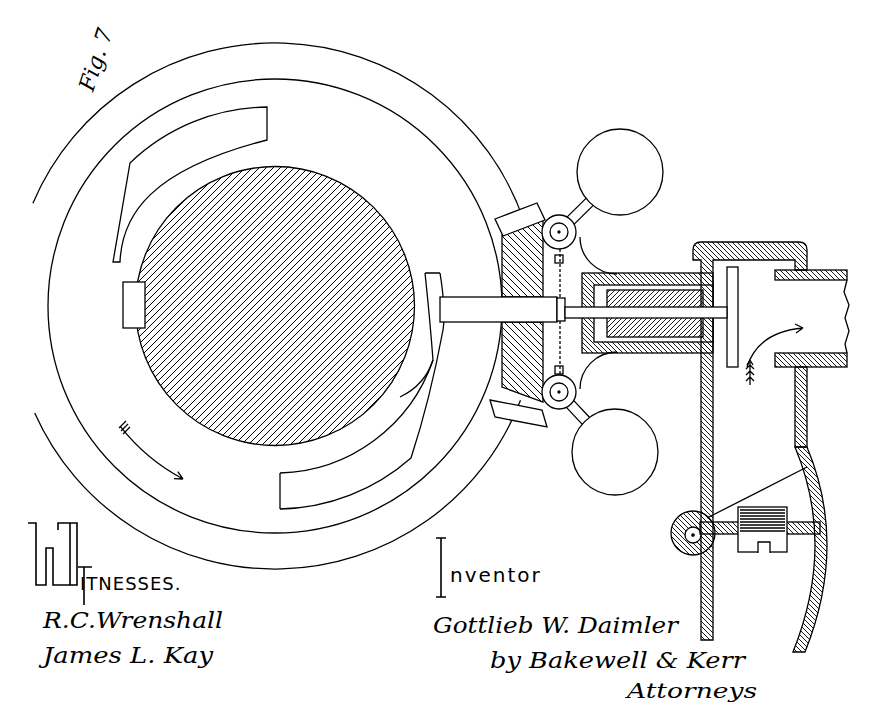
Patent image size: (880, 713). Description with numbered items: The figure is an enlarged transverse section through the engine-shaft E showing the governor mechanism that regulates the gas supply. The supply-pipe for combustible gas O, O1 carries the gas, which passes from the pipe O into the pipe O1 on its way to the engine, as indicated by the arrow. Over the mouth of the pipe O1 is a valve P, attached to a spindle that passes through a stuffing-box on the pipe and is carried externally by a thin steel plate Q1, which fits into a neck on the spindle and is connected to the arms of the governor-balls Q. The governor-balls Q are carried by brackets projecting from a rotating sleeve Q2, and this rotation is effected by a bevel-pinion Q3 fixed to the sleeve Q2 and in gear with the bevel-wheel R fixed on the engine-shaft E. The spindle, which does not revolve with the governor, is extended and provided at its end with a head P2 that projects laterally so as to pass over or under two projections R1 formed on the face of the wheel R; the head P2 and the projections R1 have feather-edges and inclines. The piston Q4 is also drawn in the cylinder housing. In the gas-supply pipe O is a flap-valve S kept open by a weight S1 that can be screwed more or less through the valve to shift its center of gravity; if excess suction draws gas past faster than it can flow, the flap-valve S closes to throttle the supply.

The bevel-wheel R is at (278, 306).
The projections R1 is at (273, 307).
The engine-shaft E is at (269, 306).
The head P2 is at (422, 354).
The valve P is at (590, 317).
The governor-balls Q is at (615, 312).
The thin steel plate Q1 is at (556, 312).
The sleeve Q2 is at (647, 300).
The bevel-pinion Q3 is at (518, 303).
The piston Q4 is at (655, 311).
The supply-pipe for combustible gas O is at (760, 447).
The supply-pipe O1 is at (812, 318).
The flap-valve S is at (745, 511).
The weight S1 is at (762, 542).